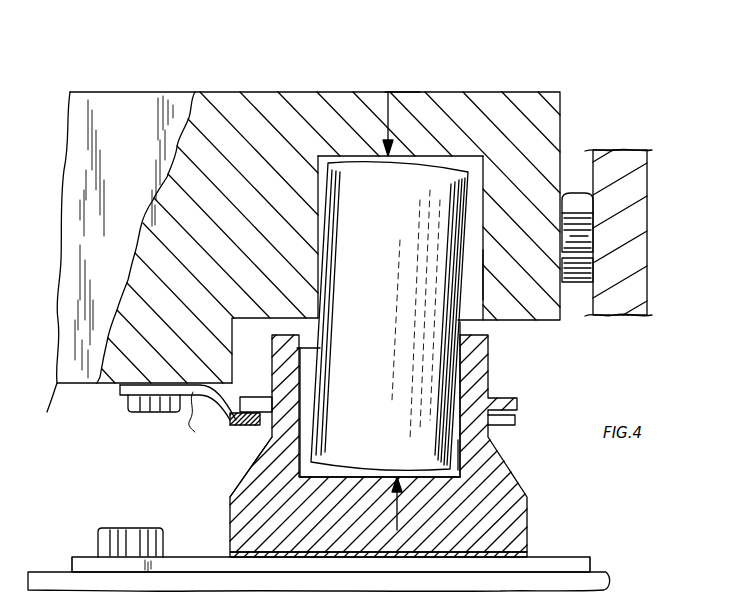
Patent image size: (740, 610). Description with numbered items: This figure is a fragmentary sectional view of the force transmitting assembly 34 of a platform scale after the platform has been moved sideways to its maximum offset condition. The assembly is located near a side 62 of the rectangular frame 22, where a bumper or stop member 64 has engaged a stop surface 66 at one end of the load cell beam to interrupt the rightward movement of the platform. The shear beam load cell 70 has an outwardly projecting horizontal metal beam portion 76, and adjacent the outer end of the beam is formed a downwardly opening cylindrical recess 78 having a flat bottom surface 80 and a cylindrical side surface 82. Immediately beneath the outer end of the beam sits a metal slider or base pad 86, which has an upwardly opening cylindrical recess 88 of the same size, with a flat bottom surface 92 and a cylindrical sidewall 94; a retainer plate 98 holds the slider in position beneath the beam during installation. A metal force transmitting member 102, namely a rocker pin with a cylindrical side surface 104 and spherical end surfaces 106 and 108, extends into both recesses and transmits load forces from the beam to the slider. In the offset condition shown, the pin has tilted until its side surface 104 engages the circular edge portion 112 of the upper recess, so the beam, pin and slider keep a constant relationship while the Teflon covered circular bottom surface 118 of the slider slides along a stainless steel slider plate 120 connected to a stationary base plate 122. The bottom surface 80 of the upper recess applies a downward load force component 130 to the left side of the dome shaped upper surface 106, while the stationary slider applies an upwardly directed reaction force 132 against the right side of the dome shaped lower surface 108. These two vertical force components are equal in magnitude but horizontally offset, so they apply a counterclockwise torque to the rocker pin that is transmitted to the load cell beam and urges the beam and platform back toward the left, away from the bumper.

The rectangular frame 22 is at (630, 153).
The force transmitting assembly 34 is at (399, 90).
The side of the frame 62 is at (622, 317).
The bumper or stop member 64 is at (578, 225).
The stop surface 66 is at (584, 286).
The shear beam load cell or force transducer 70 is at (148, 92).
The horizontal metal beam portion 76 is at (268, 106).
The downwardly opening cylindrical recess 78 is at (476, 238).
The flat bottom surface 80 is at (458, 156).
The cylindrical side surface 82 is at (485, 260).
The slider or base pad 86 is at (514, 472).
The upwardly opening cylindrical recess 88 is at (455, 443).
The flat bottom surface 92 is at (290, 472).
The cylindrical sidewall 94 is at (277, 430).
The retainer plate or member 98 is at (185, 396).
The force transmitting member 102 is at (460, 326).
The cylindrical side surface 104 is at (317, 325).
The end surface 106 is at (440, 168).
The end surface 108 is at (332, 470).
The circular edge portion 112 is at (318, 290).
The Teflon covered circular bottom surface 118 is at (524, 556).
The slider plate 120 is at (572, 558).
The stationary base plate 122 is at (596, 584).
The downward load force component 130 is at (390, 112).
The upwardly directed reaction force 132 is at (400, 512).